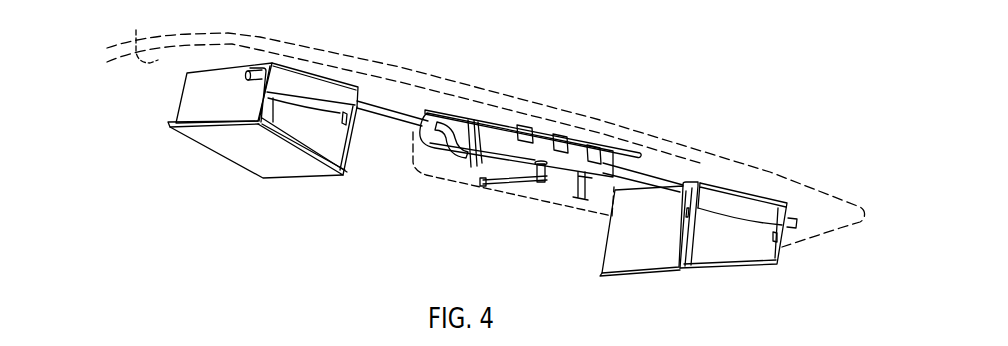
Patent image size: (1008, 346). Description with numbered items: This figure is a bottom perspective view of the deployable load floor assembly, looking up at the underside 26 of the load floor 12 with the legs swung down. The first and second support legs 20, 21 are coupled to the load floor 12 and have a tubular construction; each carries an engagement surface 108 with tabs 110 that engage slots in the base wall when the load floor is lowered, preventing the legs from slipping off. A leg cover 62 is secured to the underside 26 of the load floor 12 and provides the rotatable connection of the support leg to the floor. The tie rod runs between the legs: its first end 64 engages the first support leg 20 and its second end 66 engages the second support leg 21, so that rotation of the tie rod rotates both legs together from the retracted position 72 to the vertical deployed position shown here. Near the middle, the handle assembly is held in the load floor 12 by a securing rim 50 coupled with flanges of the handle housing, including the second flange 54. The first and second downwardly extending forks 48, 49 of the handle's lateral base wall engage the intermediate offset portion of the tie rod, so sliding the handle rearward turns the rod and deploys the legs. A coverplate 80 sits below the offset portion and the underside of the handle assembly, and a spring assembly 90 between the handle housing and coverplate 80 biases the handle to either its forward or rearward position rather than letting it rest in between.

The load floor 12 is at (408, 70).
The underside 26 is at (141, 33).
The first support leg 20 is at (245, 155).
The second support leg 21 is at (648, 252).
The engagement surface 108 is at (181, 92).
The tabs 110 is at (170, 126).
The leg cover 62 is at (308, 86).
The first end 64 is at (373, 108).
The second end 66 is at (663, 195).
The retracted position 72 is at (152, 177).
The securing rim 50 is at (597, 133).
The second flange 54 is at (643, 131).
The first fork 48 is at (455, 157).
The second fork 49 is at (573, 193).
The spring assembly 90 is at (513, 183).
The coverplate 80 is at (522, 193).